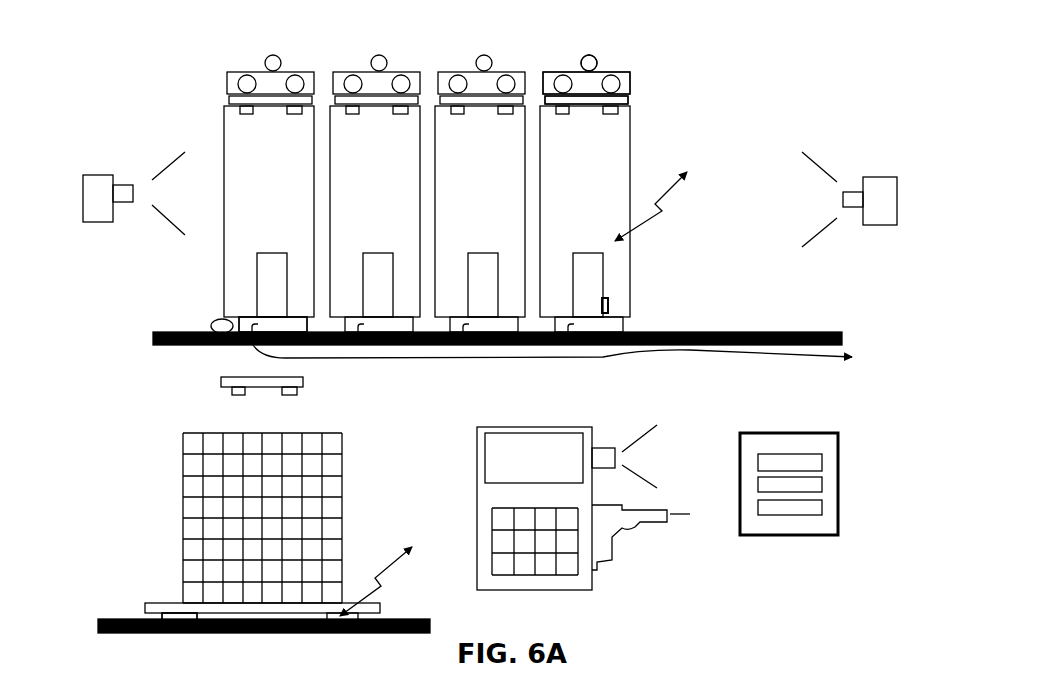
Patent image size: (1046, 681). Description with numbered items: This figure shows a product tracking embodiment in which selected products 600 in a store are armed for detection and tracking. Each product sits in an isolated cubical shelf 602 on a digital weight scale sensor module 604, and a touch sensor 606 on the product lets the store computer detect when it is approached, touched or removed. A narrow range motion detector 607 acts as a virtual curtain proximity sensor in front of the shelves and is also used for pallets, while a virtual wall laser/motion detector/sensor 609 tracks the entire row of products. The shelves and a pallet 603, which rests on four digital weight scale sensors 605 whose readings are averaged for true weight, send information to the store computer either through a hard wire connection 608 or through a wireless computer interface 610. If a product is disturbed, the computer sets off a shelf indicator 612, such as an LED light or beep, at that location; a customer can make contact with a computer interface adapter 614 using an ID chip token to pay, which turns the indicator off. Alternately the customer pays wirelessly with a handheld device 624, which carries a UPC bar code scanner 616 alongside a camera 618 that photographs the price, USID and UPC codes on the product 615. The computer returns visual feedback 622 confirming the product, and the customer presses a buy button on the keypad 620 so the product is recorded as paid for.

The selected products 600 is at (142, 330).
The cubical shelves 602 is at (622, 121).
The pallets 603 is at (368, 608).
The digital weight scale sensor modules 604 is at (247, 323).
The digital weight scale sensors 605 is at (178, 617).
The touch sensors 606 is at (607, 308).
The narrow range motion detector 607 is at (628, 98).
The hard wire connection 608 is at (803, 357).
The virtual wall laser/motion detector/sensor 609 is at (880, 180).
The wireless computer interface 610 is at (528, 383).
The shelf indicator 612 is at (597, 63).
The computer interface adapter 614 is at (219, 320).
The product 615 is at (767, 433).
The UPC bar code scanner 616 is at (628, 532).
The camera 618 is at (602, 450).
The keypad 620 is at (497, 540).
The visual feedback 622 is at (514, 452).
The handheld device 624 is at (607, 505).